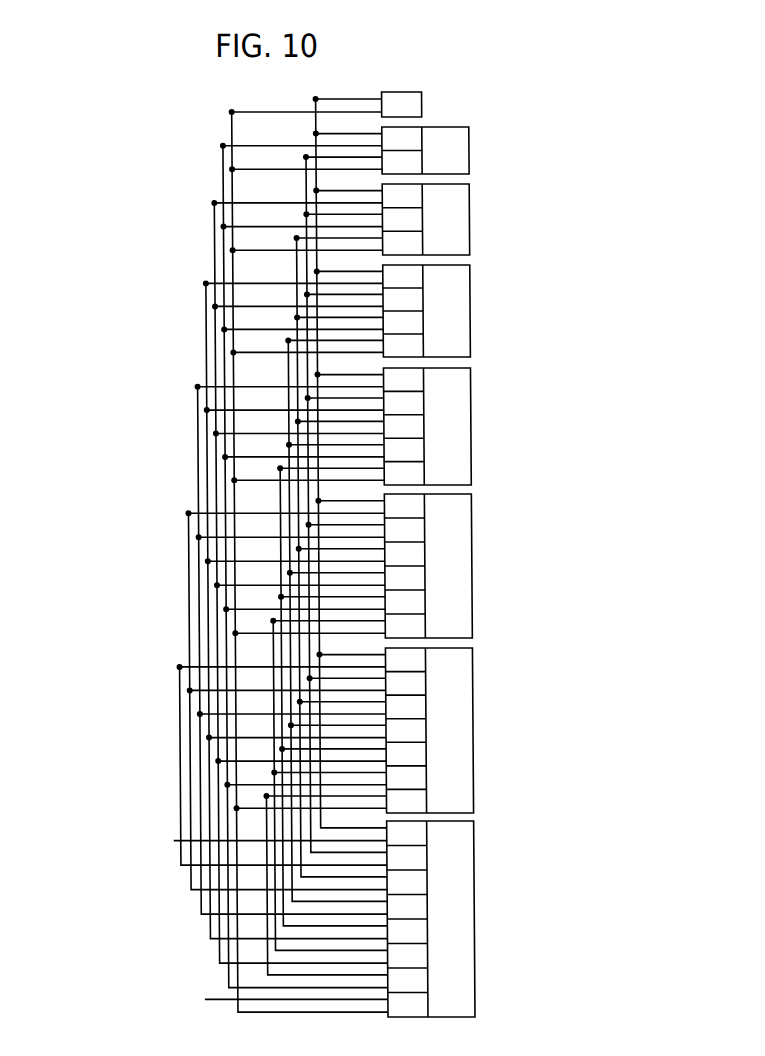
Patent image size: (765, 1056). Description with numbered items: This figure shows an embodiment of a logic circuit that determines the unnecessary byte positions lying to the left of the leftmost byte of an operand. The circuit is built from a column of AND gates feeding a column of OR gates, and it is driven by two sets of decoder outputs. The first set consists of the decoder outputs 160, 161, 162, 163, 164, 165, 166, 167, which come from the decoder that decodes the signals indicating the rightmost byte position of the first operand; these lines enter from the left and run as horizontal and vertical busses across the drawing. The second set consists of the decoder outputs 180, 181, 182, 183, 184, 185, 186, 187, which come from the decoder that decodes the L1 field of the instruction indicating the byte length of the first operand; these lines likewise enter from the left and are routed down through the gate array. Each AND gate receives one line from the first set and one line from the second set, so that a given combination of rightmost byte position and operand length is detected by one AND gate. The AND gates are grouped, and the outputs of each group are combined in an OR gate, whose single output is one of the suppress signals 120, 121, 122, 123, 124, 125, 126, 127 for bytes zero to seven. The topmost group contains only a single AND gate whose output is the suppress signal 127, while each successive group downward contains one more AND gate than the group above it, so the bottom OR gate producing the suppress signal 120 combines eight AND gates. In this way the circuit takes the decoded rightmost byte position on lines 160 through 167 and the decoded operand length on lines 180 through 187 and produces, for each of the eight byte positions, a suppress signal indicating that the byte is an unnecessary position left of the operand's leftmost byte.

The suppress signal 120 is at (470, 919).
The suppress signal 121 is at (470, 705).
The suppress signal 122 is at (470, 565).
The suppress signal 123 is at (470, 426).
The suppress signal 124 is at (470, 310).
The suppress signal 125 is at (470, 218).
The suppress signal 126 is at (470, 149).
The suppress signal 127 is at (423, 100).
The decoder output 160 is at (200, 999).
The decoder output 161 is at (263, 796).
The decoder output 162 is at (271, 621).
The decoder output 163 is at (279, 468).
The decoder output 164 is at (288, 340).
The decoder output 165 is at (297, 238).
The decoder output 166 is at (307, 157).
The decoder output 167 is at (317, 99).
The decoder output 180 is at (233, 112).
The decoder output 181 is at (224, 146).
The decoder output 182 is at (215, 203).
The decoder output 183 is at (206, 283).
The decoder output 184 is at (197, 387).
The decoder output 185 is at (187, 513).
The decoder output 186 is at (177, 667).
The decoder output 187 is at (170, 841).